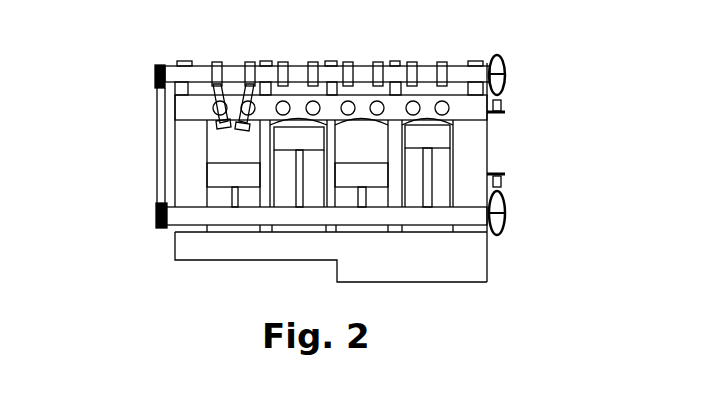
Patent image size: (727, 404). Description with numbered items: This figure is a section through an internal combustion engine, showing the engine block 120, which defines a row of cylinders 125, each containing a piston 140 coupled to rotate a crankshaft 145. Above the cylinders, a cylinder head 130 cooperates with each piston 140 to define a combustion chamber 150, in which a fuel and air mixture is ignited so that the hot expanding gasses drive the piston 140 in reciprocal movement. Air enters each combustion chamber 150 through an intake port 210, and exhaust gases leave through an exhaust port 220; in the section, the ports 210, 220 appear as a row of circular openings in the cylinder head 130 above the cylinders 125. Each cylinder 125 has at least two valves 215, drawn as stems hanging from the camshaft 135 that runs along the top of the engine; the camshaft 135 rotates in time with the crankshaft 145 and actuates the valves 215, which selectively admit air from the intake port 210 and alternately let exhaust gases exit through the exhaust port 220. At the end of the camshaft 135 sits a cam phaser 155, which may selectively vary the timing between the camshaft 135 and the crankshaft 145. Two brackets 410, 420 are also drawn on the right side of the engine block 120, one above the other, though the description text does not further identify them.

The engine block 120 is at (177, 163).
The cylinder 125 is at (337, 148).
The cylinder head 130 is at (207, 120).
The camshaft 135 is at (232, 70).
The piston 140 is at (365, 173).
The crankshaft 145 is at (202, 219).
The combustion chamber 150 is at (430, 121).
The cam phaser 155 is at (155, 72).
The intake port 210 is at (352, 101).
The valves 215 is at (238, 120).
The exhaust port 220 is at (307, 102).
The upper bracket 410 is at (503, 110).
The lower bracket 420 is at (503, 177).